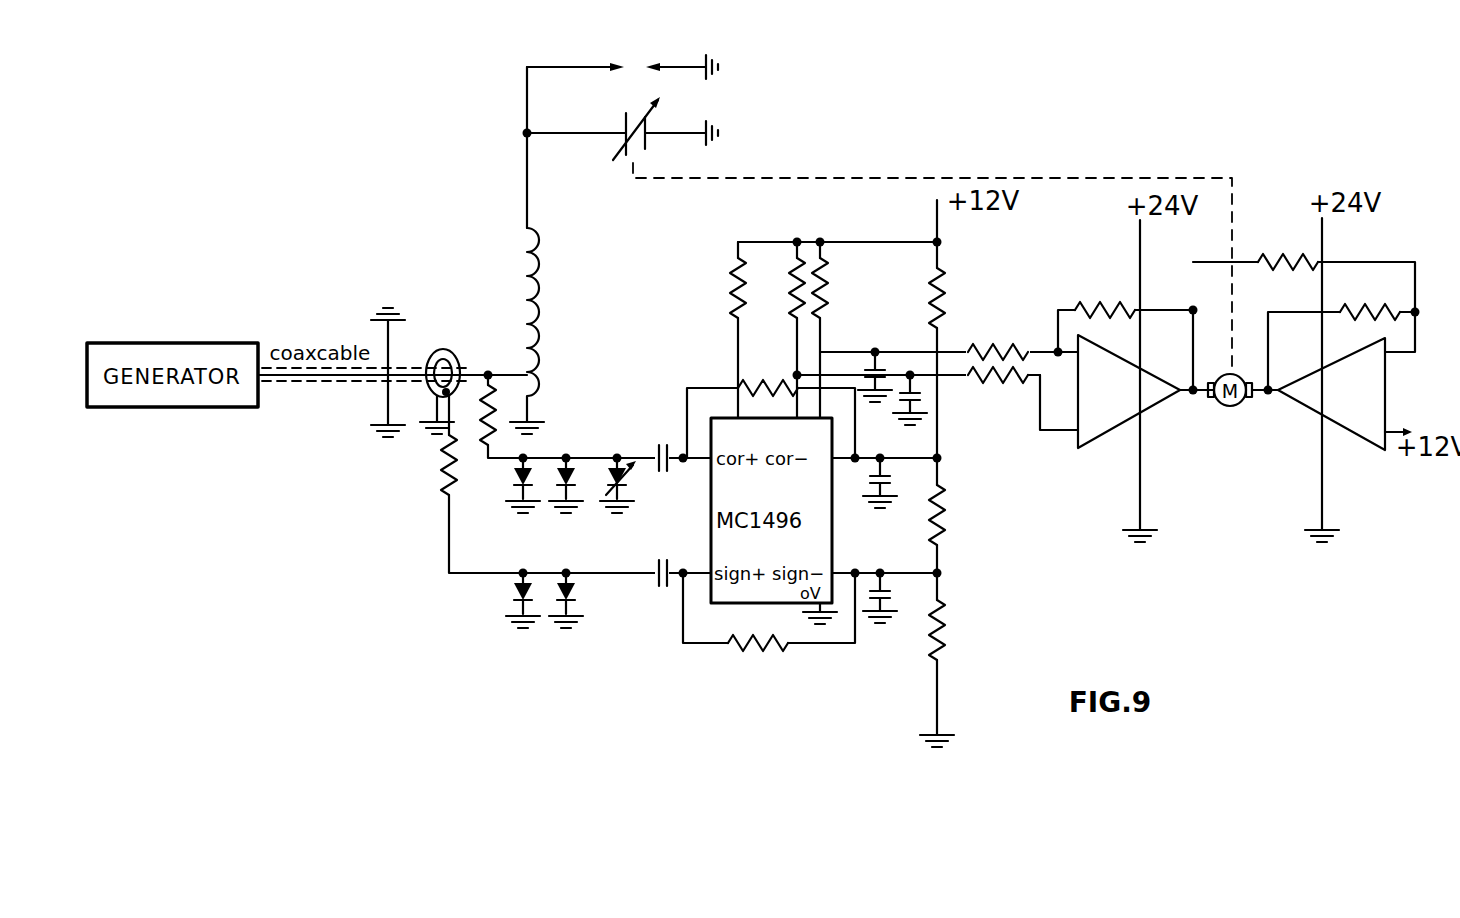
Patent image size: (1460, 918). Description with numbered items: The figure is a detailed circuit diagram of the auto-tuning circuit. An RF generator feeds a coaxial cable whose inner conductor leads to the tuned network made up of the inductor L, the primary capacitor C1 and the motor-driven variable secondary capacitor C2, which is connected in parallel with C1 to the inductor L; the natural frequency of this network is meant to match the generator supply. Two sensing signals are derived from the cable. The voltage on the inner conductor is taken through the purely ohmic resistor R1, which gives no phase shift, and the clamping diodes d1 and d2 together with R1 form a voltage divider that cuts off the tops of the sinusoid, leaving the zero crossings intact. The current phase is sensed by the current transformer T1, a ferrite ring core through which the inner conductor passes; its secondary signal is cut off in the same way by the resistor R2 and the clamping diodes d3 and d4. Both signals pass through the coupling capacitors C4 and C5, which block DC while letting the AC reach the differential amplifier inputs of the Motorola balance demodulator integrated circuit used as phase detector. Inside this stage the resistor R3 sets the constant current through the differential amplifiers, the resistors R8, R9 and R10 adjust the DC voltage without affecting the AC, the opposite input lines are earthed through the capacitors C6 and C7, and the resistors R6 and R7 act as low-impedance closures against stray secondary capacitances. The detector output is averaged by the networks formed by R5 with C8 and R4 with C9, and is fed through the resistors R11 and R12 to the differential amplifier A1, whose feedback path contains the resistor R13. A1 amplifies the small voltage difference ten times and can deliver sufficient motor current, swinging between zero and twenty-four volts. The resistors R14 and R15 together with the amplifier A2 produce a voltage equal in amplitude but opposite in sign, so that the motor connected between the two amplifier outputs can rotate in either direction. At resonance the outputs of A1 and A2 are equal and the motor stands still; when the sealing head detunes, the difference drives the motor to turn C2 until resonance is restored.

The current transformer T1 is at (455, 350).
The inductor L is at (540, 376).
The primary capacitor C1 is at (634, 66).
The secondary capacitor C2 is at (634, 130).
The resistor R1 is at (482, 445).
The resistor R2 is at (440, 475).
The clamping diode d1 is at (512, 470).
The clamping diode d2 is at (578, 470).
The clamping diode d3 is at (628, 470).
The clamping diode d4 is at (578, 585).
The DC blocking capacitor C4 is at (660, 440).
The DC blocking capacitor C5 is at (660, 590).
The resistor R3 is at (735, 290).
The resistor R4 is at (795, 300).
The resistor R5 is at (828, 300).
The resistor R6 is at (770, 385).
The resistor R7 is at (760, 648).
The capacitor C6 is at (890, 480).
The capacitor C7 is at (890, 595).
The capacitor C8 is at (882, 395).
The capacitor C9 is at (920, 398).
The resistor R8 is at (945, 280).
The resistor R9 is at (945, 535).
The resistor R10 is at (945, 650).
The resistor R11 is at (978, 345).
The resistor R12 is at (1000, 385).
The resistor R13 is at (1100, 303).
The resistor R14 is at (1280, 255).
The resistor R15 is at (1368, 285).
The differential amplifier A1 is at (1129, 391).
The amplifier A2 is at (1345, 394).